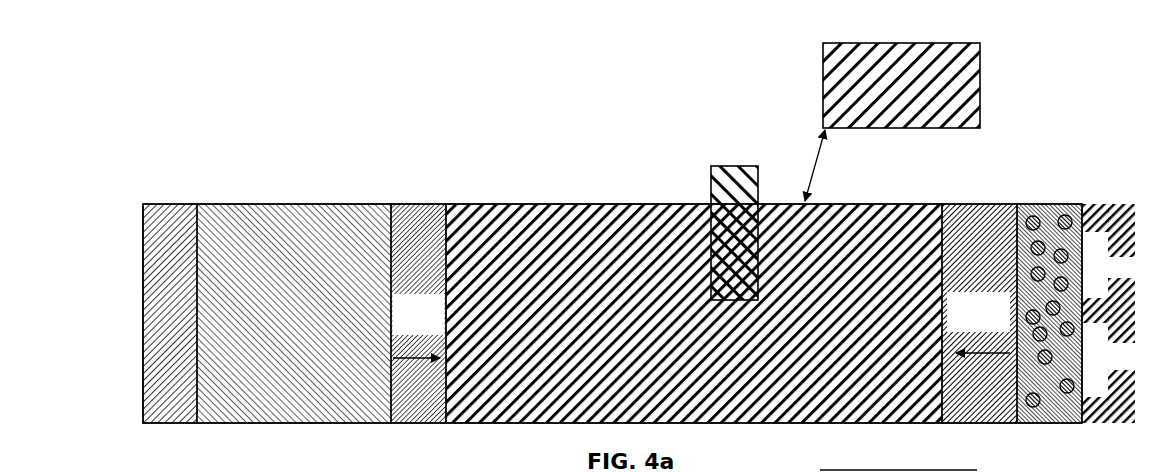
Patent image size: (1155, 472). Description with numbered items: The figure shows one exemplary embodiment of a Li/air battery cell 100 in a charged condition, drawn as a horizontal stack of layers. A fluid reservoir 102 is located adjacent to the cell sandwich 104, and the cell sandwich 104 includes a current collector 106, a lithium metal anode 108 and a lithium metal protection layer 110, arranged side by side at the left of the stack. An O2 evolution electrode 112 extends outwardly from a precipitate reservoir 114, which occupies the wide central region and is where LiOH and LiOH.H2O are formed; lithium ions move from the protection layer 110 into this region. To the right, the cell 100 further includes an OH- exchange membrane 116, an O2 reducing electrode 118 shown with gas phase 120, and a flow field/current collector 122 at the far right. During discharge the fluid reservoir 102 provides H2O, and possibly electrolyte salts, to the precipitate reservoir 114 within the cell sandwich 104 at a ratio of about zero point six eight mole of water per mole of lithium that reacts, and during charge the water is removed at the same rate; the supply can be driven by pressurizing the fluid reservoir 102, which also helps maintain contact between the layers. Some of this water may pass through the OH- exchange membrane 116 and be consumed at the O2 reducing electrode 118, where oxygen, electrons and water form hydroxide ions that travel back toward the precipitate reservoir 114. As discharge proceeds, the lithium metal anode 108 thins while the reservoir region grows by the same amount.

The battery cell 100 is at (470, 96).
The fluid reservoir 102 is at (823, 73).
The cell sandwich 104 is at (345, 153).
The current collector 106 is at (184, 209).
The lithium metal anode 108 is at (293, 204).
The lithium metal protection layer 110 is at (435, 204).
The O2 evolution electrode 112 is at (728, 167).
The precipitate reservoir 114 is at (592, 205).
The OH- exchange membrane 116 is at (968, 205).
The O2 reducing electrode 118 is at (1027, 285).
The gas phase 120 is at (1033, 218).
The flow field/current collector 122 is at (1132, 205).